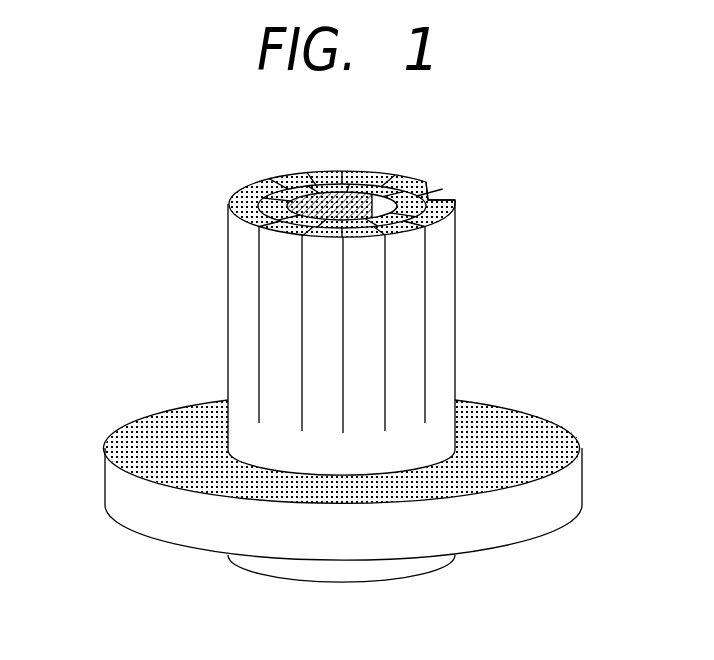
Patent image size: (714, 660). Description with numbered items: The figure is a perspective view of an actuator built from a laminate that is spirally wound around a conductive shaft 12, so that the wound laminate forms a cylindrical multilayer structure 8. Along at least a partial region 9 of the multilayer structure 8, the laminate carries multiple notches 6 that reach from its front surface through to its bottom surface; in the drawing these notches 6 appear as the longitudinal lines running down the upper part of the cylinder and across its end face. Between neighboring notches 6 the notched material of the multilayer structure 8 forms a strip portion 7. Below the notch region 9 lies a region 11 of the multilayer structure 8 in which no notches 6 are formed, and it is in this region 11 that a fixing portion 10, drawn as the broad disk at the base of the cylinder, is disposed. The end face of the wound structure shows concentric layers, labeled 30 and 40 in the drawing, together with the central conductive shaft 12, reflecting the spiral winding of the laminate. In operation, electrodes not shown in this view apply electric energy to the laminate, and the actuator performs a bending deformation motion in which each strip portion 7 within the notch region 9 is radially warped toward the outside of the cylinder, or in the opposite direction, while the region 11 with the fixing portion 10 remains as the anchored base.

The notches 6 is at (427, 253).
The strip portion 7 is at (358, 345).
The multilayer structure 8 is at (376, 421).
The partial region 9 is at (302, 376).
The fixing portion 10 is at (578, 478).
The region 11 is at (344, 487).
The conductive shaft 12 is at (363, 173).
The inner ring 30 is at (420, 193).
The cut portion 40 is at (440, 200).